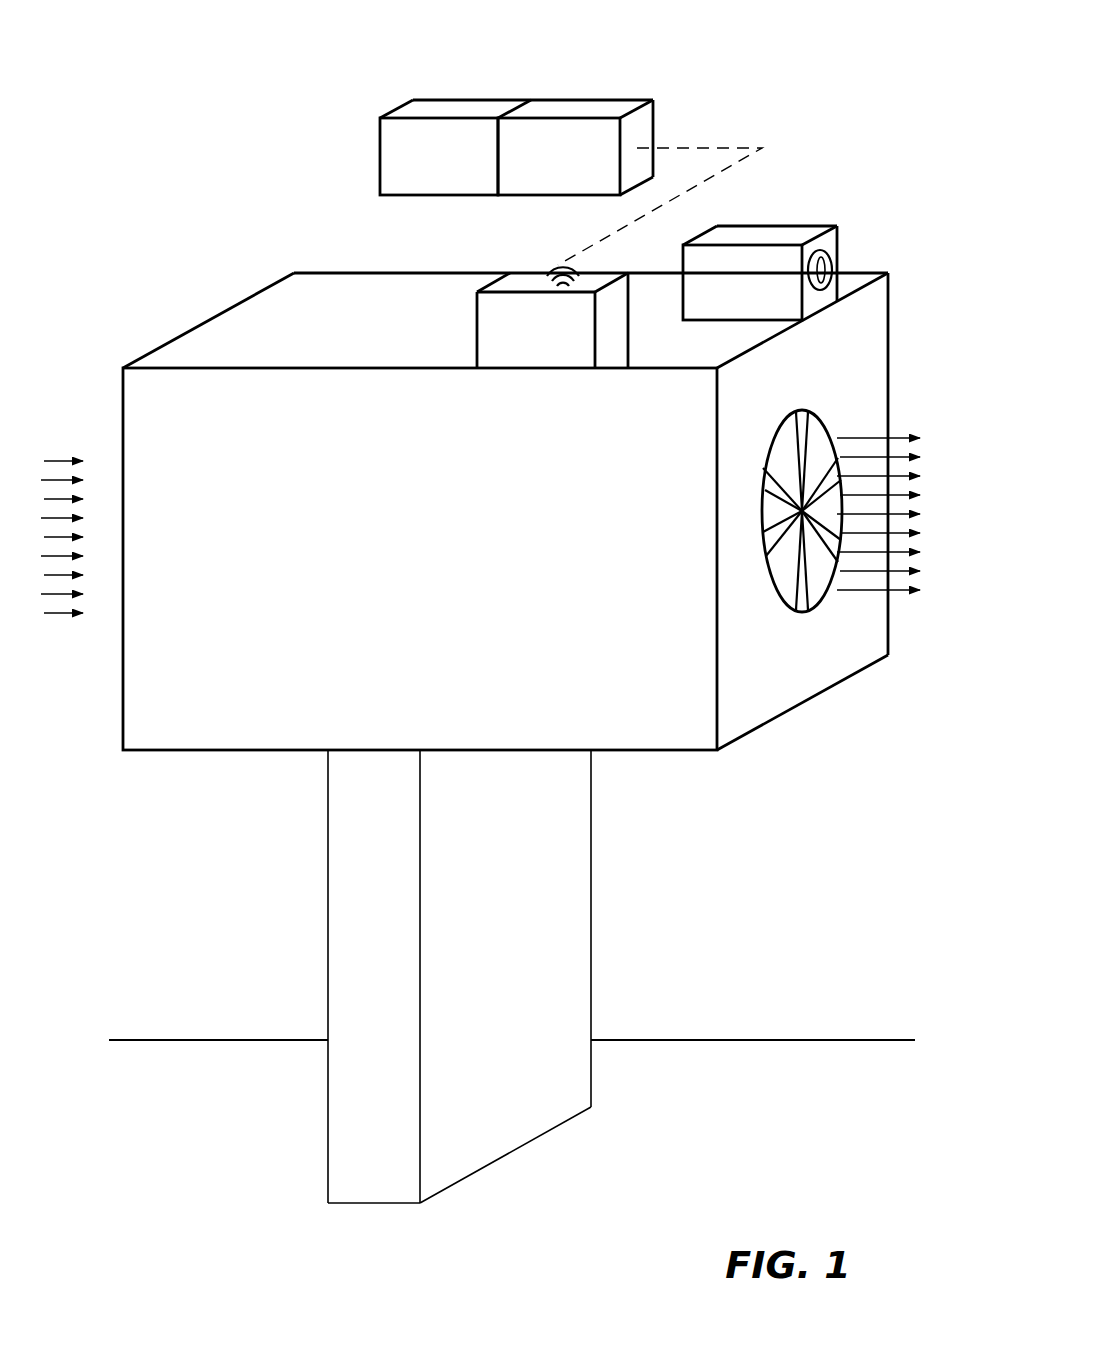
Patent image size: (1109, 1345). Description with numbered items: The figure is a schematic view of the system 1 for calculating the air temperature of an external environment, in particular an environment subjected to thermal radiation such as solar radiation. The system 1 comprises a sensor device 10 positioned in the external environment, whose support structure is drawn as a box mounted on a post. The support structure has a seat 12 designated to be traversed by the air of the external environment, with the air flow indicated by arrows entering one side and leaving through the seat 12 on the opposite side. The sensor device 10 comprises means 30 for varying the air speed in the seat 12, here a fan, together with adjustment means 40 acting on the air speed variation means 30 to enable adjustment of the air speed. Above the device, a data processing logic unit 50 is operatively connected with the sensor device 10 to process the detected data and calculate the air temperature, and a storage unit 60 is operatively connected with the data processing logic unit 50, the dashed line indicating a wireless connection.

The system 1 is at (899, 76).
The sensor device 10 is at (222, 202).
The seat 12 is at (825, 428).
The means for varying the air speed 30 is at (809, 608).
The adjustment means 40 is at (835, 262).
The data processing logic unit 50 is at (590, 100).
The storage unit 60 is at (470, 100).